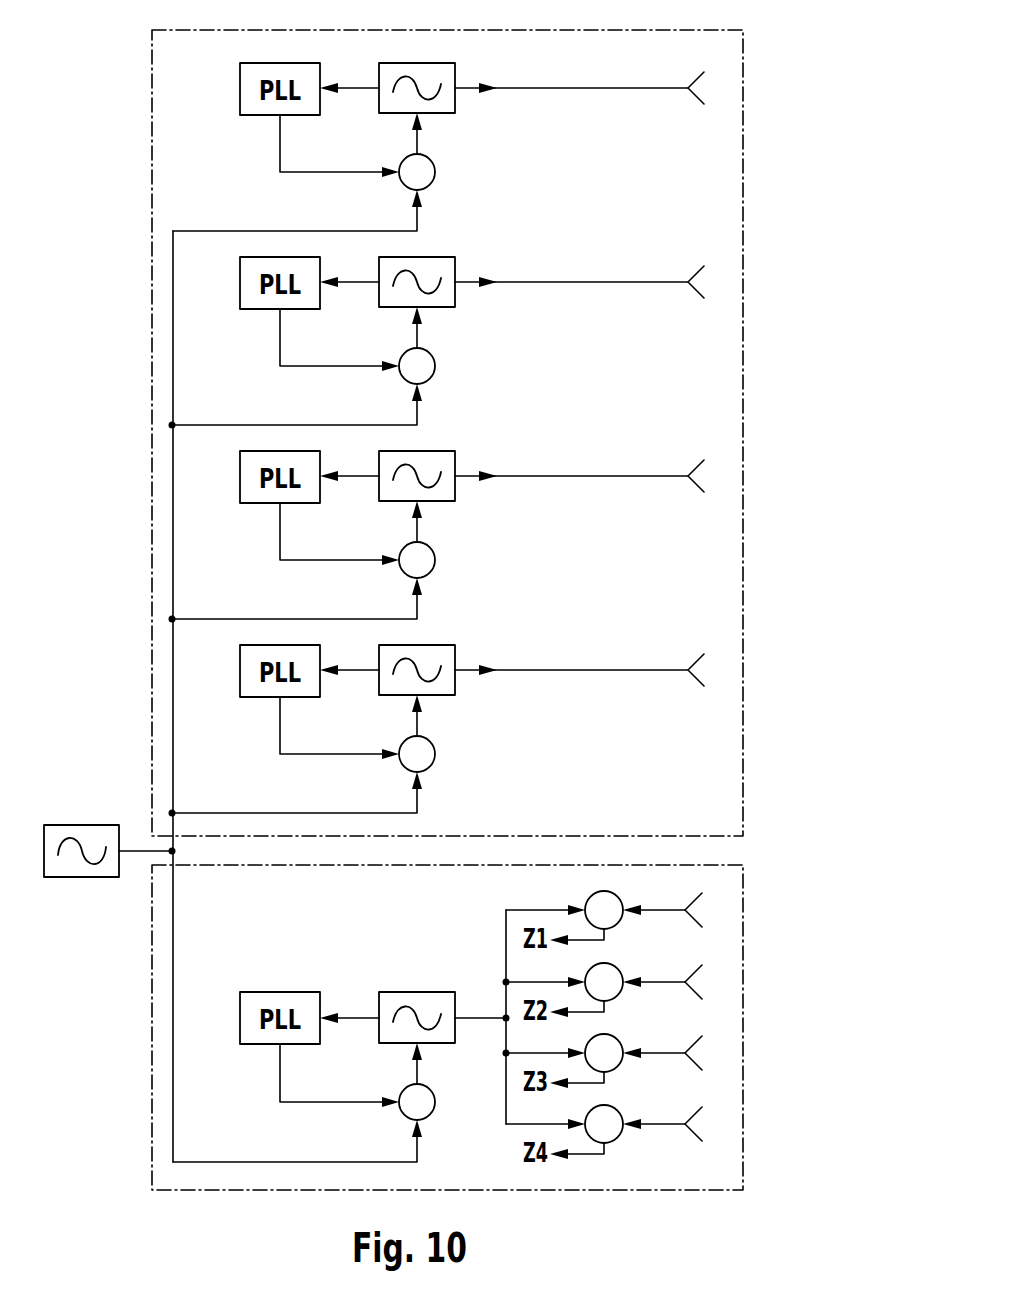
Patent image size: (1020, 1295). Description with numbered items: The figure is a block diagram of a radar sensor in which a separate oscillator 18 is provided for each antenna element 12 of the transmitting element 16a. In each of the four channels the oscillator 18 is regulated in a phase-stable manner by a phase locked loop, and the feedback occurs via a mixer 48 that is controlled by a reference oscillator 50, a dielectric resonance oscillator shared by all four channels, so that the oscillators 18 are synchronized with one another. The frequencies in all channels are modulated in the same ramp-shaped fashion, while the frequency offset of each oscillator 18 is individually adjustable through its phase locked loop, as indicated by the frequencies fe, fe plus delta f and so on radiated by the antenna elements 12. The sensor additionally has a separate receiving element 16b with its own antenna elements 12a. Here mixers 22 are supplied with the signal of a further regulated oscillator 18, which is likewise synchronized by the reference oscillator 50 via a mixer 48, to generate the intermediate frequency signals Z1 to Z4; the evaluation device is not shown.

The transmitting element 16a is at (152, 153).
The receiving element 16b is at (152, 958).
The oscillator 18 is at (457, 104).
The mixer 48 is at (436, 172).
The antenna element 12 is at (690, 106).
The antenna element 12a is at (688, 905).
The mixer 22 is at (590, 897).
The reference oscillator 50 is at (84, 825).